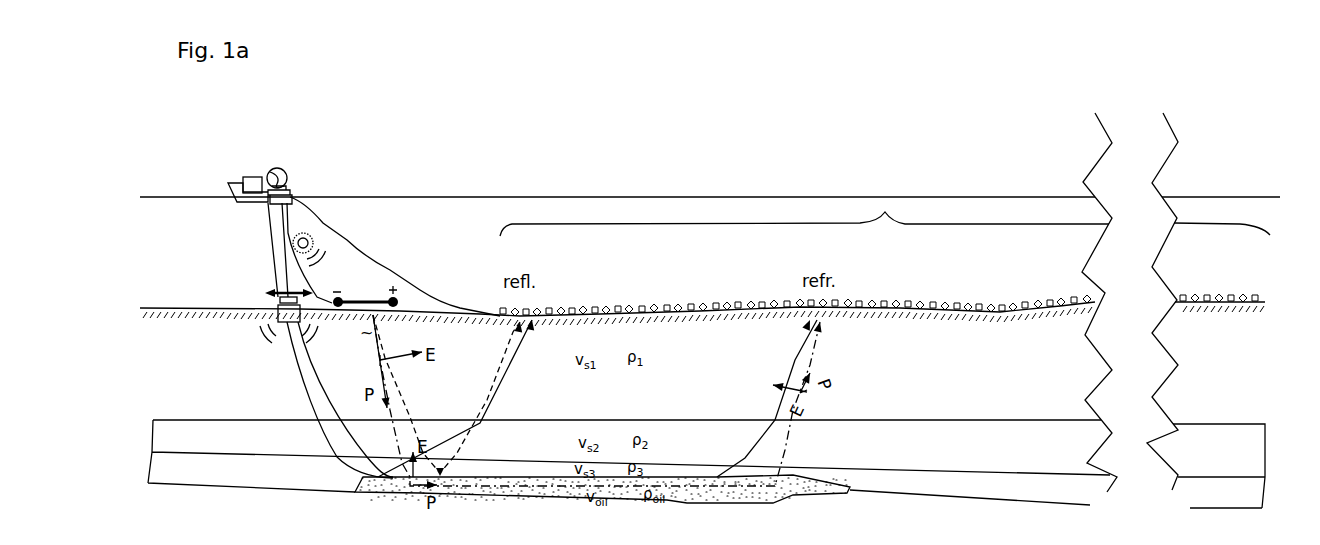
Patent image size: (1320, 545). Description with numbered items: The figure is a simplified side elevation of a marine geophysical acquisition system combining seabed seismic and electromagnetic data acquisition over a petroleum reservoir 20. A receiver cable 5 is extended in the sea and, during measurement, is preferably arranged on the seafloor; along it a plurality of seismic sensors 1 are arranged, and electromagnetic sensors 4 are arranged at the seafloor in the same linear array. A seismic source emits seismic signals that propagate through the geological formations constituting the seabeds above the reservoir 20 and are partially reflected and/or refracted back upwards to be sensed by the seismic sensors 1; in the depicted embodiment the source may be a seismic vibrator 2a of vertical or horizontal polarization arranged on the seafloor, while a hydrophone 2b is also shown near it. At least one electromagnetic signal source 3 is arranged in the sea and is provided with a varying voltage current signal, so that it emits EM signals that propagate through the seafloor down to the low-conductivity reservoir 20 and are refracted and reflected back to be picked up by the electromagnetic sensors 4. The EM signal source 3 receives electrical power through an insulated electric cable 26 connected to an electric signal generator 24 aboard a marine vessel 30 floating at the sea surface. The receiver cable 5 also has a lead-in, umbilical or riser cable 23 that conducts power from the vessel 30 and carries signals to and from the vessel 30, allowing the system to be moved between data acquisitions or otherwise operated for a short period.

The seismic sensors 1 is at (767, 308).
The seismic vibrator 2a is at (277, 300).
The hydrophone 2b is at (295, 247).
The electromagnetic signal source 3 is at (382, 283).
The electromagnetic sensors 4 is at (758, 363).
The receiver cable 5 is at (885, 210).
The reservoir 20 is at (602, 489).
The lead-in cable 23 is at (368, 300).
The electric signal generator 24 is at (287, 170).
The insulated electric cable 26 is at (305, 285).
The marine vessel 30 is at (255, 180).